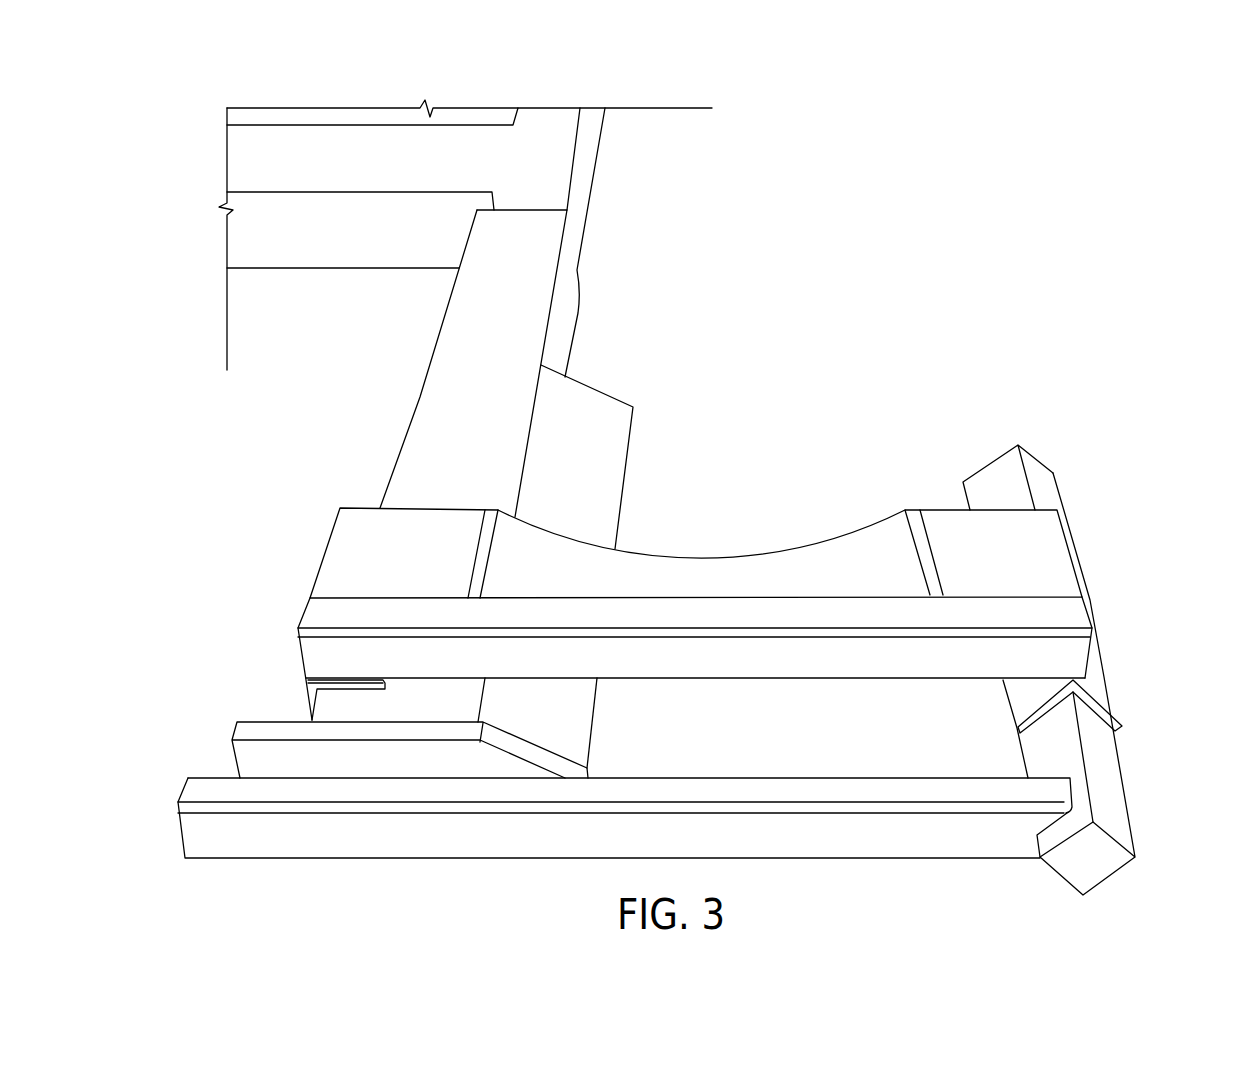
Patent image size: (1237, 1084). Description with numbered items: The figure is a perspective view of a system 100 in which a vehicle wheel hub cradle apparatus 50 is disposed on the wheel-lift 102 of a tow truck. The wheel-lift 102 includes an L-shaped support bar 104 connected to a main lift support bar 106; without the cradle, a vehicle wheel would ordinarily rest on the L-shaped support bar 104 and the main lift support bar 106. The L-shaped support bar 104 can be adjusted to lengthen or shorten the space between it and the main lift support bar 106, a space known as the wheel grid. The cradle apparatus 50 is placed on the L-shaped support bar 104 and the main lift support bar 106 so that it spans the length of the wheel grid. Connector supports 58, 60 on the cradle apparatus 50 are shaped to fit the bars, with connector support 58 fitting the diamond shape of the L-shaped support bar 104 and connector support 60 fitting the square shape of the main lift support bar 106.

The system 100 is at (857, 377).
The main lift support bar 106 is at (460, 345).
The cradle apparatus 50 is at (810, 558).
The connector support 58 is at (305, 693).
The wheel-lift 102 is at (425, 842).
The connector support 60 is at (1097, 682).
The L-shaped support bar 104 is at (1110, 780).